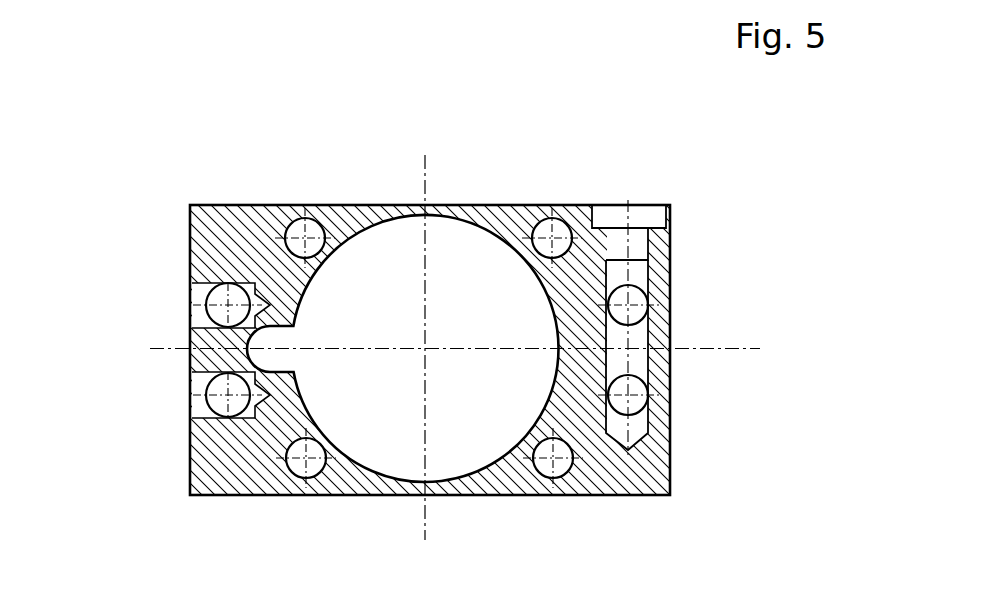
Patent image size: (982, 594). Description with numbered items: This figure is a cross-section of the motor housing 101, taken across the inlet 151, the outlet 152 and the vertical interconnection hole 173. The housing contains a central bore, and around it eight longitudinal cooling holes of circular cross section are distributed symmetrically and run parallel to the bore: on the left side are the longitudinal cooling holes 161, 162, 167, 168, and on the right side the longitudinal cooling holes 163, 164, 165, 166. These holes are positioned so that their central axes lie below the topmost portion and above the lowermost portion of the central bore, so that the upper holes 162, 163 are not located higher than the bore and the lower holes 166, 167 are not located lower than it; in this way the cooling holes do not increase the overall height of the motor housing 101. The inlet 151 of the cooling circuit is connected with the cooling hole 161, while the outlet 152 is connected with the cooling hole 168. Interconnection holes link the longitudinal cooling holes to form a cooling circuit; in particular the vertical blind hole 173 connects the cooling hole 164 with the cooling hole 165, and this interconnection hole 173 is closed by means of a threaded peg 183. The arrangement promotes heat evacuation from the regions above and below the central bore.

The motor housing 101 is at (361, 146).
The inlet 151 is at (189, 308).
The outlet 152 is at (189, 385).
The longitudinal cooling hole 161 is at (214, 300).
The longitudinal cooling hole 162 is at (300, 218).
The longitudinal cooling hole 163 is at (546, 218).
The longitudinal cooling hole 164 is at (642, 309).
The longitudinal cooling hole 165 is at (644, 389).
The longitudinal cooling hole 166 is at (553, 478).
The longitudinal cooling hole 167 is at (300, 480).
The longitudinal cooling hole 168 is at (224, 402).
The vertical blind hole 173 is at (648, 353).
The threaded peg 183 is at (627, 205).